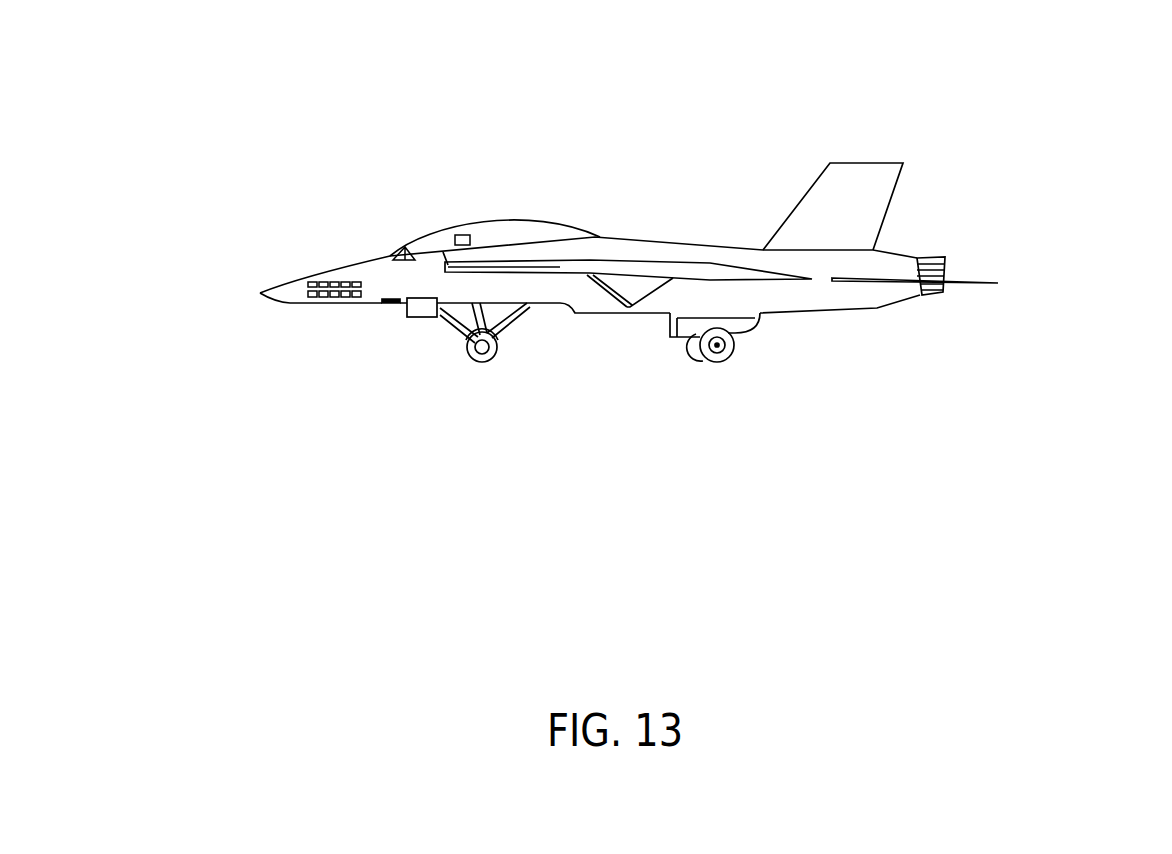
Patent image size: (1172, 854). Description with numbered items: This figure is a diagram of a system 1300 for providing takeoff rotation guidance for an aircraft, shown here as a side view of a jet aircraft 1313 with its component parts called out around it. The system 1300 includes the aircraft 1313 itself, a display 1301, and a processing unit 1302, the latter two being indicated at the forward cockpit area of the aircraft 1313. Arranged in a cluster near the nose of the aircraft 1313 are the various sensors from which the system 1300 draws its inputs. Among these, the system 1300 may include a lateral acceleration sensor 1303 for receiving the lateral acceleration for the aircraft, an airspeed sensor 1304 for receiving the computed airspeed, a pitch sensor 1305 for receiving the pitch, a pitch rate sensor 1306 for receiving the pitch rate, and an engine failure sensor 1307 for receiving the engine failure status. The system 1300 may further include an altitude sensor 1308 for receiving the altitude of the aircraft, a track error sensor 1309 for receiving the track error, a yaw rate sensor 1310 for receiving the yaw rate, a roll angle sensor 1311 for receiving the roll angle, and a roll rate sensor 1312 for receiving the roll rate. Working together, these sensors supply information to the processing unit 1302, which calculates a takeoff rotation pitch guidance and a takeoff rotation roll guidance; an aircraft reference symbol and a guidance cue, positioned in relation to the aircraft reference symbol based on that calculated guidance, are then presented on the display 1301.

The system 1300 is at (1040, 132).
The display 1301 is at (410, 250).
The processing unit 1302 is at (462, 235).
The lateral acceleration sensor 1303 is at (356, 282).
The airspeed sensor 1304 is at (345, 282).
The pitch sensor 1305 is at (334, 282).
The pitch rate sensor 1306 is at (323, 282).
The engine failure sensor 1307 is at (312, 282).
The altitude sensor 1308 is at (356, 297).
The track error sensor 1309 is at (345, 297).
The yaw rate sensor 1310 is at (334, 297).
The roll angle sensor 1311 is at (323, 297).
The roll rate sensor 1312 is at (312, 297).
The aircraft 1313 is at (710, 282).